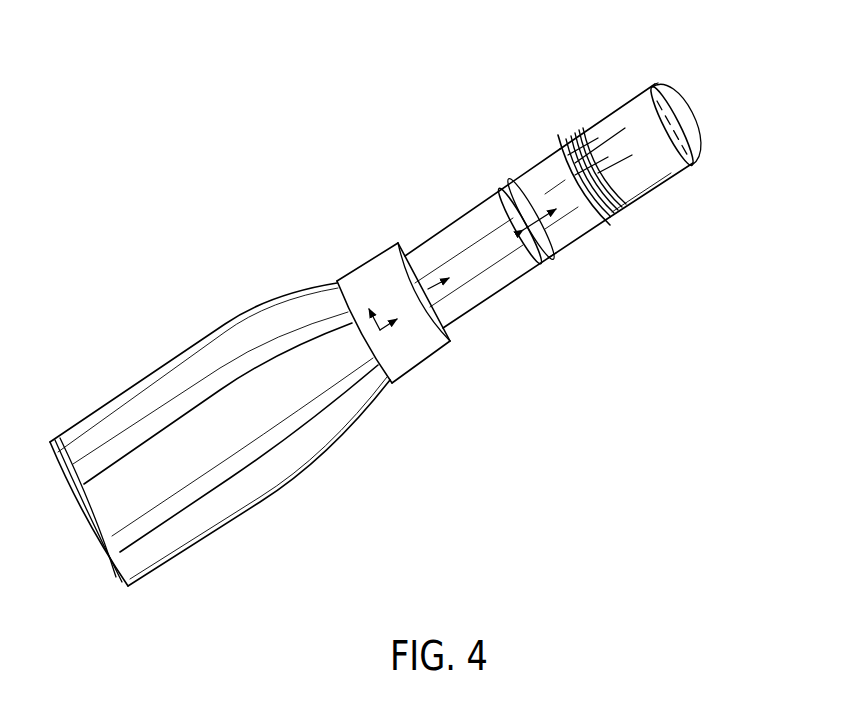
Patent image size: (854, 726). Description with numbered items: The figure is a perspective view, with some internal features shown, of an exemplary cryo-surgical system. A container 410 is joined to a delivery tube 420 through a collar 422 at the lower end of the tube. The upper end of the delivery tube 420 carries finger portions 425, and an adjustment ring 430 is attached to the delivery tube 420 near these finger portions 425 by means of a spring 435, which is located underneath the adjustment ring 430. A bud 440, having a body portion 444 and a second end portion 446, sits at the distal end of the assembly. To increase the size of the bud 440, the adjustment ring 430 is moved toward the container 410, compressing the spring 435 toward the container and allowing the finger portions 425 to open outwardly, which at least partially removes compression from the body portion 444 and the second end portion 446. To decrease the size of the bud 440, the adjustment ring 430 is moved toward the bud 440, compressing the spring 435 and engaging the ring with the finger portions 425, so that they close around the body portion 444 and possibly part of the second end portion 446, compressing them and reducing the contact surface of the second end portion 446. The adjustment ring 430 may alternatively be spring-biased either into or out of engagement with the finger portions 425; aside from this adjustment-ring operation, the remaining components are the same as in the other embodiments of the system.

The container 410 is at (192, 341).
The delivery tube 420 is at (440, 233).
The collar 422 is at (373, 258).
The finger portions 425 is at (560, 130).
The adjustment ring 430 is at (533, 172).
The spring 435 is at (555, 253).
The bud 440 is at (632, 99).
The body portion 444 is at (665, 190).
The second end portion 446 is at (701, 130).